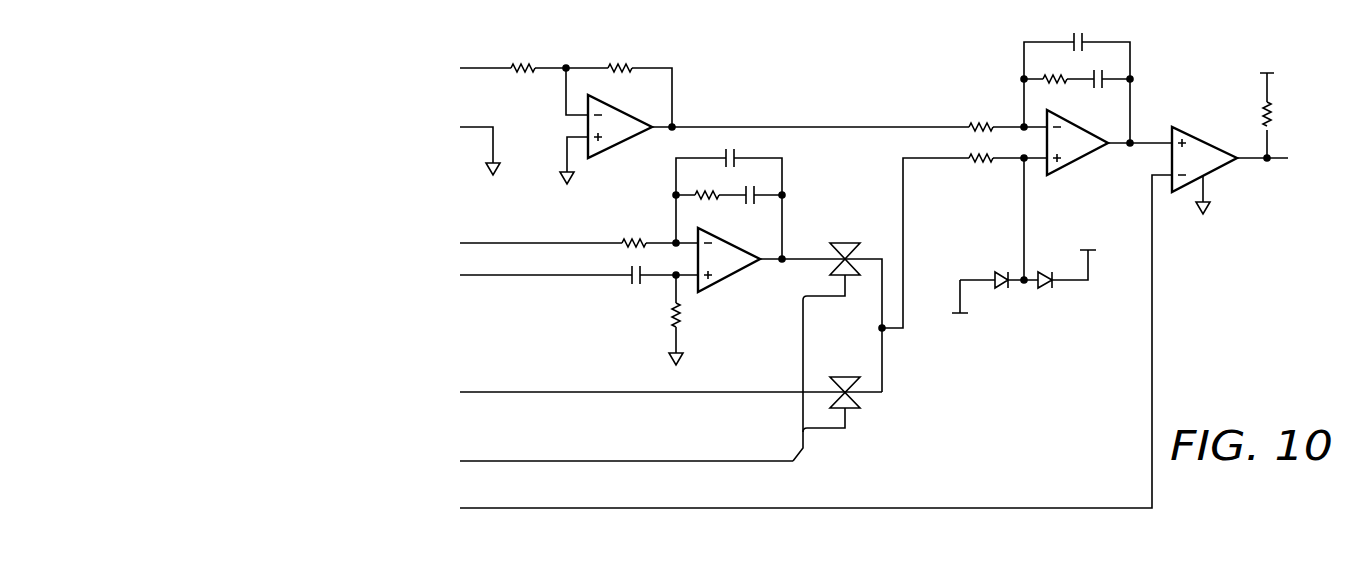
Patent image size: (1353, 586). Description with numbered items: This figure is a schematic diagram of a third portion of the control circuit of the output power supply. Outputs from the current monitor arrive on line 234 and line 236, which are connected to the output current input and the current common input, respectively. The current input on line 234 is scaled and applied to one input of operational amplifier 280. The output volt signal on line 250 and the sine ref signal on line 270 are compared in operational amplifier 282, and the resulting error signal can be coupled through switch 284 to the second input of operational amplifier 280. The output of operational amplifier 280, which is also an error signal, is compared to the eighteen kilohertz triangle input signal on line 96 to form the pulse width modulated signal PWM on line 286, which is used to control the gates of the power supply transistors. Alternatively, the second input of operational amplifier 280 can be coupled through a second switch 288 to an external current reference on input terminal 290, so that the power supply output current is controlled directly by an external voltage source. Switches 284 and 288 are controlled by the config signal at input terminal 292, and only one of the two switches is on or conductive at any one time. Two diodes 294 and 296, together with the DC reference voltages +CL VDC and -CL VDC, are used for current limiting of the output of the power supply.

The triangle input line 96 is at (1153, 305).
The output current line 234 is at (483, 66).
The current common line 236 is at (490, 145).
The output volt line 250 is at (527, 241).
The sine ref line 270 is at (514, 278).
The operational amplifier 280 is at (1080, 162).
The operational amplifier 282 is at (733, 280).
The switch 284 is at (845, 242).
The PWM line 286 is at (1250, 162).
The second switch 288 is at (862, 402).
The external current reference input terminal 290 is at (590, 390).
The config input terminal 292 is at (528, 459).
The diode 294 is at (1045, 290).
The diode 296 is at (1004, 270).